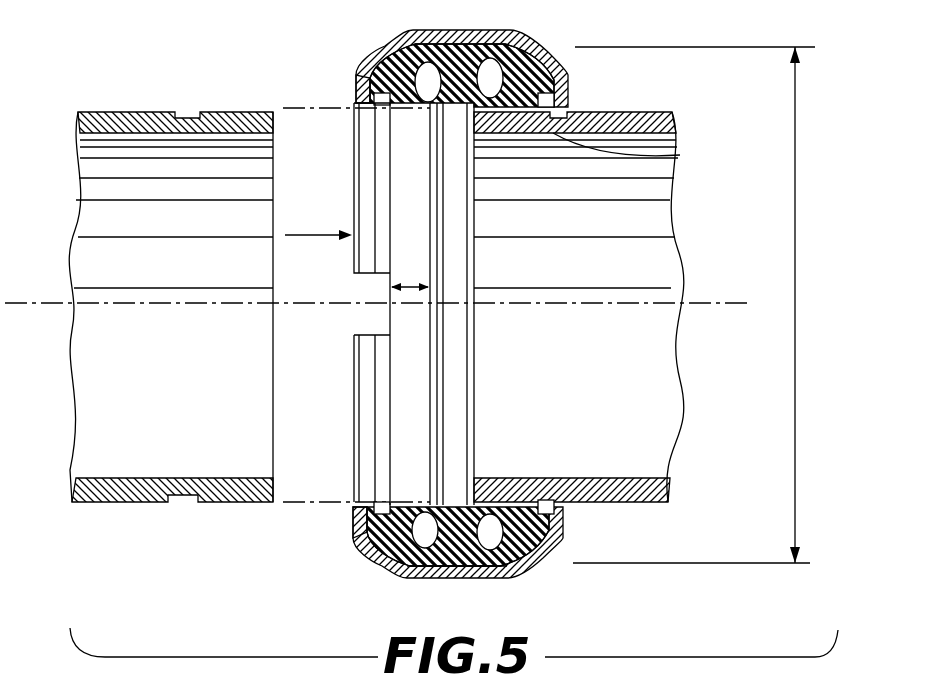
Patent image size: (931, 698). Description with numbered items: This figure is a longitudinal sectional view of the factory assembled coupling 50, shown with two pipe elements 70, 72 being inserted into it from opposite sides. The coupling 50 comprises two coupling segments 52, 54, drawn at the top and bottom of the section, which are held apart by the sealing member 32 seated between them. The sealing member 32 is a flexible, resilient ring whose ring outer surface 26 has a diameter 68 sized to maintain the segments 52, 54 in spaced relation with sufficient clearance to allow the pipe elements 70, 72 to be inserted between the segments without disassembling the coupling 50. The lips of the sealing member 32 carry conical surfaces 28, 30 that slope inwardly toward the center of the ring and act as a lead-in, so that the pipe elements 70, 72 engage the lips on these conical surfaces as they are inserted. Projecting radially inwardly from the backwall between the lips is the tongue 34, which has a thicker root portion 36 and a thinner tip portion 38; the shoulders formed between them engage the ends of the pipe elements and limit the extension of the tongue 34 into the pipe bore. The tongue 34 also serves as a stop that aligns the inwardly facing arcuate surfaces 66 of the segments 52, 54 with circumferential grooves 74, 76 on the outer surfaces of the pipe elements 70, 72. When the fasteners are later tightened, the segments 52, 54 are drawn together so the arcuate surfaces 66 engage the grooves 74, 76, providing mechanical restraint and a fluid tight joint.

The coupling 50 is at (300, 76).
The ring outer surface 26 is at (445, 34).
The conical surface 28 is at (413, 328).
The conical surface 30 is at (502, 502).
The sealing member 32 is at (392, 50).
The tongue 34 is at (385, 547).
The root portion 36 is at (457, 566).
The tip portion 38 is at (458, 484).
The coupling segment 52 is at (535, 48).
The coupling segment 54 is at (530, 563).
The arcuate surfaces 66 is at (360, 140).
The diameter 68 is at (798, 330).
The pipe element 70 is at (102, 498).
The pipe element 72 is at (642, 478).
The circumferential groove 74 is at (410, 287).
The circumferential groove 76 is at (672, 148).